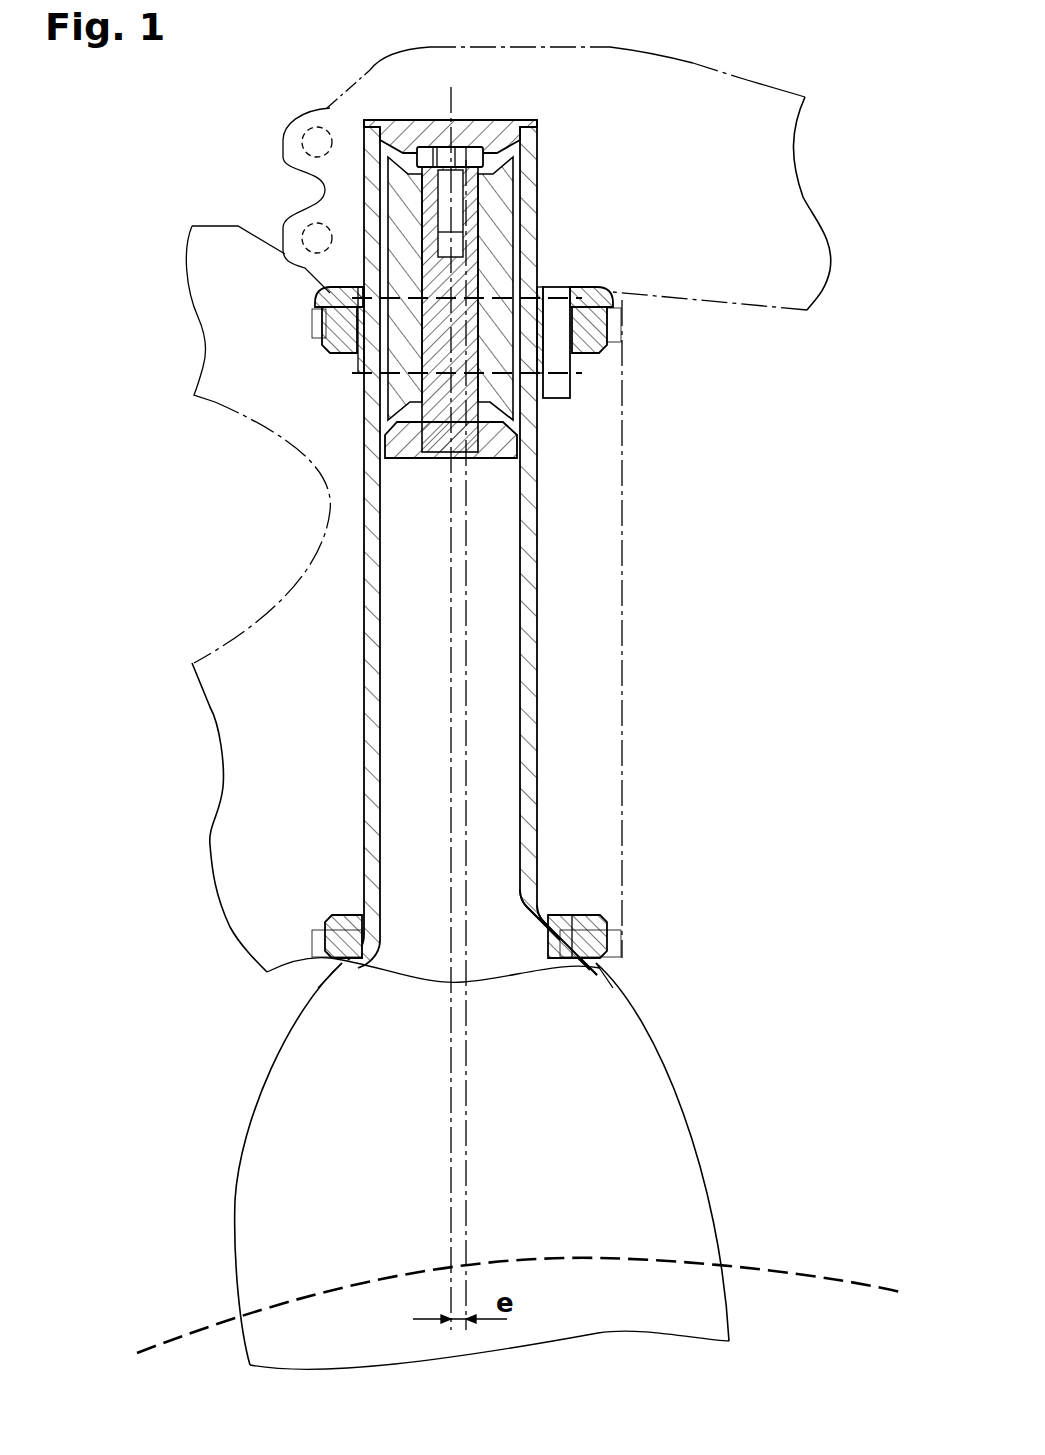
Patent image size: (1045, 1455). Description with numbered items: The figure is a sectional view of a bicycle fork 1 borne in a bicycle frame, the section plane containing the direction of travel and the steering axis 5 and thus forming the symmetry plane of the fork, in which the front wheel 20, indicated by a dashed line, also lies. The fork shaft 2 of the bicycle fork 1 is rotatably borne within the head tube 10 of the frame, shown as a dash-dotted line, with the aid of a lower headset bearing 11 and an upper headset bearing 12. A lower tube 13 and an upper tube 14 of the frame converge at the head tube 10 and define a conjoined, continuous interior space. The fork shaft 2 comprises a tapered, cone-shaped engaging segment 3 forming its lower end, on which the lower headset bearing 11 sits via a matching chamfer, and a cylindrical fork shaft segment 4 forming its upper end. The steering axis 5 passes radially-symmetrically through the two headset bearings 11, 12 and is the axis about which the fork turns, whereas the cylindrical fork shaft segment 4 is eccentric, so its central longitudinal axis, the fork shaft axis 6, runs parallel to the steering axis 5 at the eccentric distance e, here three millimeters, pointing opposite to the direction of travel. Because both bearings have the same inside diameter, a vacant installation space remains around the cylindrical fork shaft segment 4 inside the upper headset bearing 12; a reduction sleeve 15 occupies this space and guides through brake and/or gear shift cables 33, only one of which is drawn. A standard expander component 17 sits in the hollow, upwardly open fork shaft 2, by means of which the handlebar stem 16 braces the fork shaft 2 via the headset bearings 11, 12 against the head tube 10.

The bicycle fork 1 is at (690, 1180).
The fork shaft 2 is at (527, 892).
The engaging segment 3 is at (538, 925).
The cylindrical fork shaft segment 4 is at (528, 582).
The steering axis 5 is at (466, 1206).
The fork shaft axis 6 is at (451, 1206).
The head tube 10 is at (622, 712).
The lower headset bearing 11 is at (602, 945).
The upper headset bearing 12 is at (607, 332).
The lower tube 13 is at (243, 757).
The upper tube 14 is at (223, 322).
The reduction sleeve 15 is at (572, 368).
The handlebar stem 16 is at (803, 217).
The expander component 17 is at (497, 397).
The front wheel 20 is at (855, 1282).
The brake and/or gear shift cable 33 is at (572, 388).